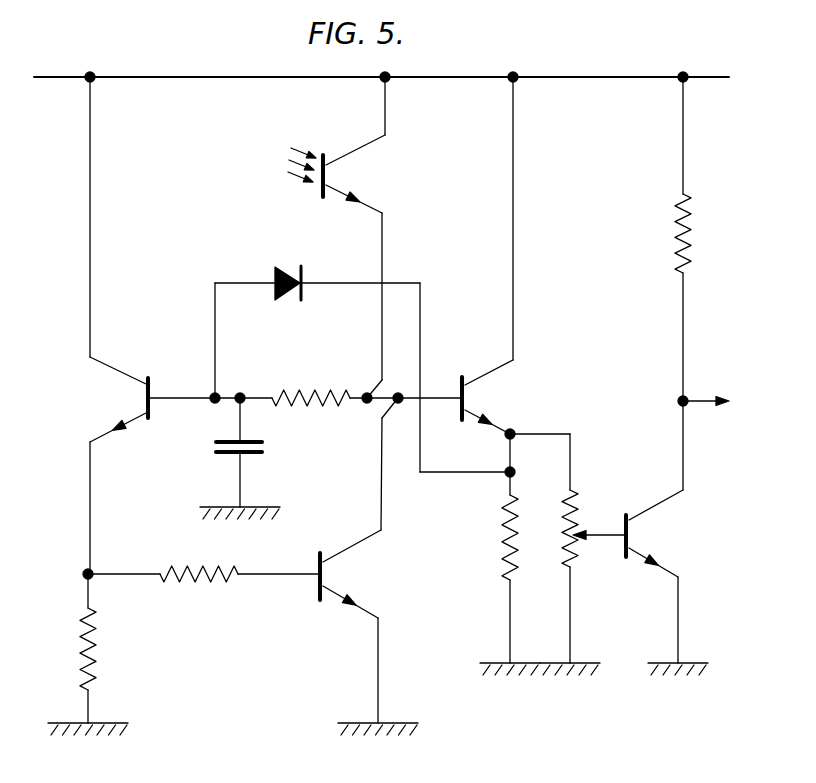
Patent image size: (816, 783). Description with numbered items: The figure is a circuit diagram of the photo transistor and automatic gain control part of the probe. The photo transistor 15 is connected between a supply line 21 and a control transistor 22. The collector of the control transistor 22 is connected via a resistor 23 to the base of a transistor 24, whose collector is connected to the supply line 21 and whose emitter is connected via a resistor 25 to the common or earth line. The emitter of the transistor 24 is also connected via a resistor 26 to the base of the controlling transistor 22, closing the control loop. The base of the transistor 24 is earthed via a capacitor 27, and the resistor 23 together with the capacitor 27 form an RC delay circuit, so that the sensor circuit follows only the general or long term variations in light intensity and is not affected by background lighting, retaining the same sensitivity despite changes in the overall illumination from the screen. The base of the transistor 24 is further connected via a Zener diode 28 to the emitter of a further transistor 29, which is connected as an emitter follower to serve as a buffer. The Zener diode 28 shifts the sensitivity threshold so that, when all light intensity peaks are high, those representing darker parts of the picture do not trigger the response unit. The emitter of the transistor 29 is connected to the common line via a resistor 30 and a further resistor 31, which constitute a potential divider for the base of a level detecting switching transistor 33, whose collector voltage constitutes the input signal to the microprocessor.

The supply line 21 is at (193, 75).
The transistor 15 is at (326, 152).
The Zener diode 28 is at (272, 278).
The transistor 24 is at (121, 372).
The resistor 23 is at (305, 388).
The capacitor 27 is at (223, 458).
The further transistor 29 is at (496, 371).
The control transistor 22 is at (315, 560).
The resistor 26 is at (180, 580).
The resistor 25 is at (82, 648).
The resistor 30 is at (500, 560).
The further resistor 31 is at (573, 562).
The level detecting switching transistor 33 is at (658, 500).